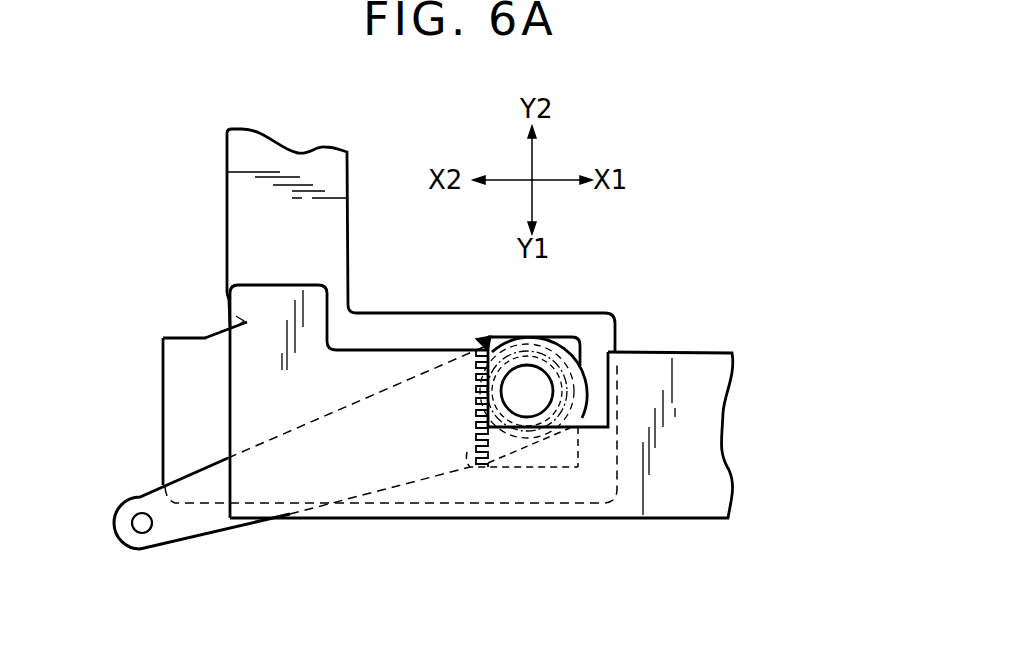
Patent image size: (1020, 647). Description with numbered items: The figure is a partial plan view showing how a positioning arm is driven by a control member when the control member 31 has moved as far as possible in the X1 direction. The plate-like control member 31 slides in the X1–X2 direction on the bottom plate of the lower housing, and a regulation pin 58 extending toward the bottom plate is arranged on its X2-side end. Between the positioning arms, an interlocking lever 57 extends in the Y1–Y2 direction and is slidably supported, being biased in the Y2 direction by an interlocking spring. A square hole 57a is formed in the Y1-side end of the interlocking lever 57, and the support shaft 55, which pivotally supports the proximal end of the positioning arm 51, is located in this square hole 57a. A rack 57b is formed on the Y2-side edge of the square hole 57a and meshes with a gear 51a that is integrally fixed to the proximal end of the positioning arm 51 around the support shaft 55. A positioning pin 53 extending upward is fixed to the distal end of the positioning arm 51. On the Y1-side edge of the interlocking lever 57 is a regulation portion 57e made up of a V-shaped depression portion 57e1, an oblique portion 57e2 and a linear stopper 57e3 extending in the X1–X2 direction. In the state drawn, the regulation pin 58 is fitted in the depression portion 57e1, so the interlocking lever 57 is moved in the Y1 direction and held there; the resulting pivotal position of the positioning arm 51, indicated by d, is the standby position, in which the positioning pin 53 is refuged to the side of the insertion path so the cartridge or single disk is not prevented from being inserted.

The control member 31 is at (678, 493).
The positioning arm 51 is at (223, 520).
The gear 51a is at (490, 336).
The positioning pin 53 is at (138, 528).
The support shaft 55 is at (533, 382).
The interlocking lever 57 is at (243, 199).
The square hole 57a is at (560, 467).
The rack 57b is at (465, 467).
The regulation portion 57e is at (205, 325).
The V-shaped depression portion 57e1 is at (247, 322).
The oblique portion 57e2 is at (224, 335).
The linear stopper 57e3 is at (185, 340).
The regulation pin 58 is at (247, 322).
The pivotal position of positioning arm d is at (172, 530).